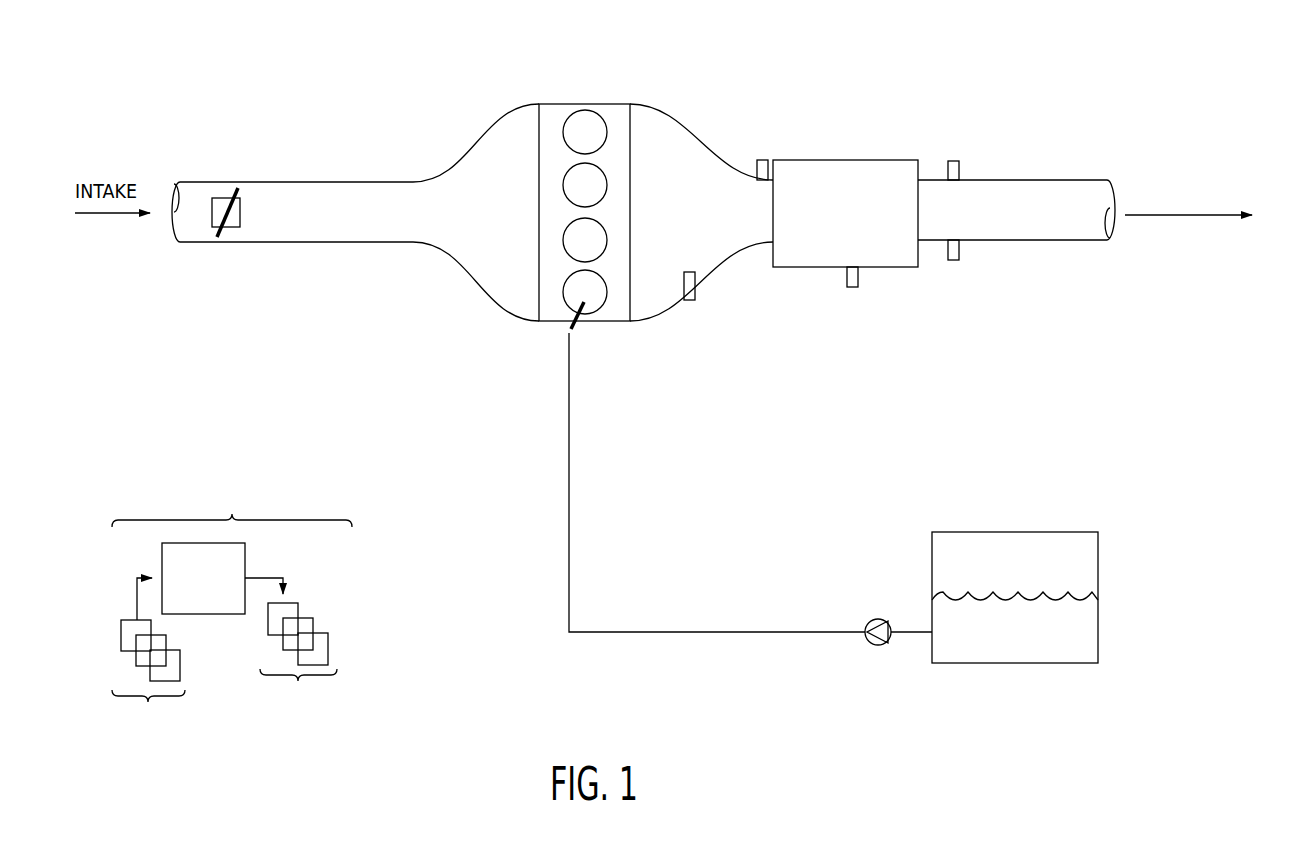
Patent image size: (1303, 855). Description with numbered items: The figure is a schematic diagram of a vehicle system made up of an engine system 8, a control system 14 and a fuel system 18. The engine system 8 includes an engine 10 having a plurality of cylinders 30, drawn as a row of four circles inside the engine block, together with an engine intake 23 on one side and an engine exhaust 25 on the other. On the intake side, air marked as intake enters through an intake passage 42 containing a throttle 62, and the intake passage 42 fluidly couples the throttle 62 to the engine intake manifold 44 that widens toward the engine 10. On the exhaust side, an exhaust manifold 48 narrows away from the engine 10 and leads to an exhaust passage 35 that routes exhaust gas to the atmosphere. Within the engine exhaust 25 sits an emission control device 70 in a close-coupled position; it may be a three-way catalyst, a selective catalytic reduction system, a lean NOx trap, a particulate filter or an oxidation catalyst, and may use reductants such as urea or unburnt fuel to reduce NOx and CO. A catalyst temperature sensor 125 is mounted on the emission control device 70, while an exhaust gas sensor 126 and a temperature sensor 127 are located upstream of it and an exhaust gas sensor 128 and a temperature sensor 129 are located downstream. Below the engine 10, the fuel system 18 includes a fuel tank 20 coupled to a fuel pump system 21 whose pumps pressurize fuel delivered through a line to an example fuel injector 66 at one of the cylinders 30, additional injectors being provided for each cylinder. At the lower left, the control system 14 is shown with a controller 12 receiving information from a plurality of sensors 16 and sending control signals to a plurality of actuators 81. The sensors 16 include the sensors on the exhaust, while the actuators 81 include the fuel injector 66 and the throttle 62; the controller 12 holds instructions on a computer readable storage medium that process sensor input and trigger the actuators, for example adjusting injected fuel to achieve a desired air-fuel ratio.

The engine system 8 is at (240, 96).
The engine 10 is at (631, 196).
The controller 12 is at (203, 578).
The control system 14 is at (232, 513).
The sensors 16 is at (148, 660).
The fuel system 18 is at (1025, 716).
The fuel tank 20 is at (1099, 640).
The fuel pump system 21 is at (872, 622).
The engine intake 23 is at (356, 160).
The engine exhaust 25 is at (952, 116).
The cylinders 30 is at (605, 126).
The exhaust passage 35 is at (1071, 180).
The intake passage 42 is at (271, 244).
The engine intake manifold 44 is at (486, 224).
The exhaust manifold 48 is at (686, 224).
The throttle 62 is at (237, 212).
The fuel injector 66 is at (577, 330).
The emission control device 70 is at (834, 160).
The actuators 81 is at (291, 651).
The catalyst temperature sensor 125 is at (847, 276).
The exhaust gas sensor 126 is at (691, 286).
The temperature sensor 127 is at (757, 172).
The exhaust gas sensor 128 is at (948, 252).
The temperature sensor 129 is at (947, 171).